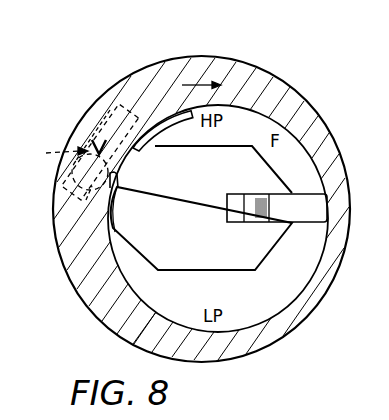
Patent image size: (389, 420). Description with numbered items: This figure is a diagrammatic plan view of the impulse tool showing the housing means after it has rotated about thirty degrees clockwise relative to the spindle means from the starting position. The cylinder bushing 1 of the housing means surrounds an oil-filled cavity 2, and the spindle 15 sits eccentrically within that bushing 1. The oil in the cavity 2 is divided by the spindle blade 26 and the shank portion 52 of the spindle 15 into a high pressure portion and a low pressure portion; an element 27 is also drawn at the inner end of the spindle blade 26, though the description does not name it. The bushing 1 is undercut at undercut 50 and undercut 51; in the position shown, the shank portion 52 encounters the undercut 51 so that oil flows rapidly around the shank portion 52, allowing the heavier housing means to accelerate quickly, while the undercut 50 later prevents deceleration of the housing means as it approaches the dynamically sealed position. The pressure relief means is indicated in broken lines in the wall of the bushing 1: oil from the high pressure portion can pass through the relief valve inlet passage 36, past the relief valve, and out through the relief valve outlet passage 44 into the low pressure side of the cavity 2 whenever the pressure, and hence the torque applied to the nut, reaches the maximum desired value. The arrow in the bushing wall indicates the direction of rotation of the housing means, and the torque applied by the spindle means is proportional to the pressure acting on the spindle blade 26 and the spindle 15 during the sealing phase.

The bushing 1 is at (215, 61).
The cavity 2 is at (135, 291).
The spindle 15 is at (218, 262).
The spindle blade 26 is at (308, 217).
The seal strip 27 is at (236, 200).
The relief valve inlet passage 36 is at (103, 100).
The relief valve outlet passage 44 is at (86, 205).
The undercut 50 is at (150, 124).
The undercut 51 is at (117, 182).
The shank portion 52 is at (113, 208).